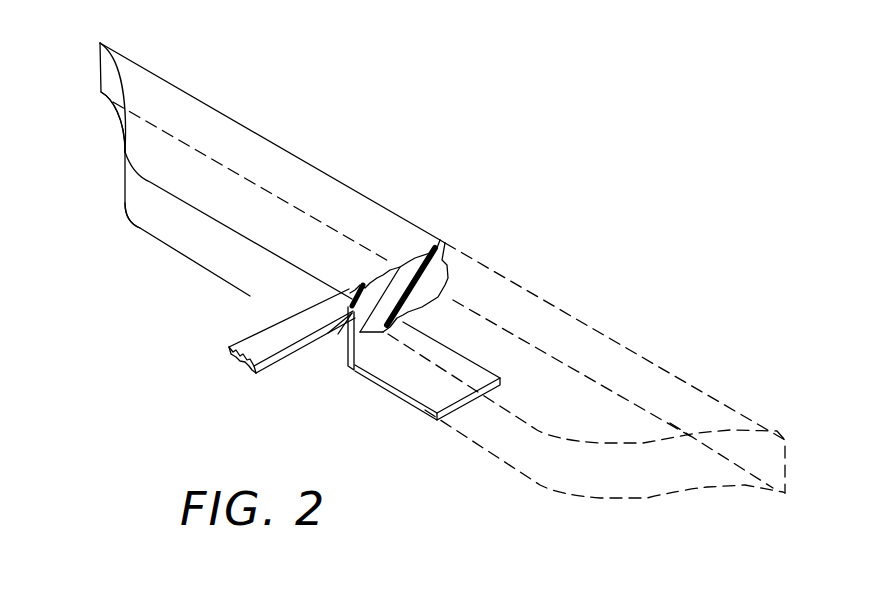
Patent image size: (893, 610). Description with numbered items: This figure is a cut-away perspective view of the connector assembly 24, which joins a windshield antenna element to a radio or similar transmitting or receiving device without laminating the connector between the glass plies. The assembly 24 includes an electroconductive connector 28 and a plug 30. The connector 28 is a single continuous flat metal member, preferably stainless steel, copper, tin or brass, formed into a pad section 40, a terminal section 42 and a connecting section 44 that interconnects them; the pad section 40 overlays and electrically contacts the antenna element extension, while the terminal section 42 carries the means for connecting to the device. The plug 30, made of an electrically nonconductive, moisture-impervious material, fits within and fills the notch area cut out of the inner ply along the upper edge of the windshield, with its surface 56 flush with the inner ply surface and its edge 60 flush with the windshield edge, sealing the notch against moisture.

The connector assembly 24 is at (395, 152).
The electroconductive connector 28 is at (377, 398).
The plug member 30 is at (134, 222).
The pad section 40 is at (427, 398).
The terminal section 42 is at (253, 333).
The connecting section 44 is at (337, 346).
The surface of plug 56 is at (150, 160).
The edge of plug 60 is at (442, 255).